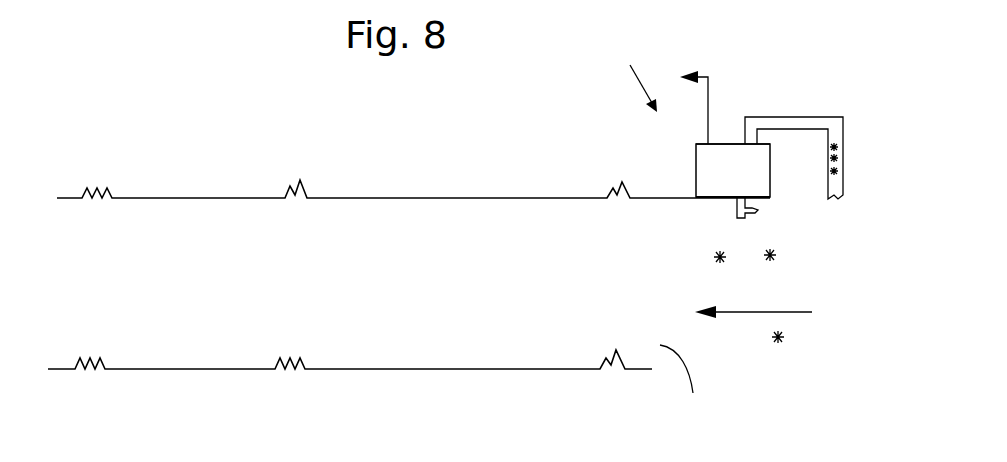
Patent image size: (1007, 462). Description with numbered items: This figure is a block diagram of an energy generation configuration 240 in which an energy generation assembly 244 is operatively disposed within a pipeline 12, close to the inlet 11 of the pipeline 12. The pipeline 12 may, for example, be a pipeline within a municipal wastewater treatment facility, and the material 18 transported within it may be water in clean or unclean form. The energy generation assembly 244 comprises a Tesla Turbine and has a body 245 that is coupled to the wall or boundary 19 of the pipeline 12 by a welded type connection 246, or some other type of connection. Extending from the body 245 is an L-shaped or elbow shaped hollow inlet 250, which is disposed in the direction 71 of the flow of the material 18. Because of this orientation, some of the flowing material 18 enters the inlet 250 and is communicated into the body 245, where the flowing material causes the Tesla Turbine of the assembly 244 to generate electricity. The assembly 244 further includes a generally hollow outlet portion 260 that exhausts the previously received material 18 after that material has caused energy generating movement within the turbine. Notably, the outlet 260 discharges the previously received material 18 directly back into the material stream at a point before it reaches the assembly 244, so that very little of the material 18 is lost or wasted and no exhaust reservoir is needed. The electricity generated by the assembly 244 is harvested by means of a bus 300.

The inlet 11 is at (687, 386).
The pipeline 12 is at (176, 377).
The material 18 is at (777, 258).
The wall or boundary 19 is at (195, 199).
The direction of flow 71 is at (730, 313).
The energy generation configuration 240 is at (625, 73).
The energy generation assembly 244 is at (723, 144).
The body 245 is at (696, 157).
The welded type connection 246 is at (696, 197).
The hollow inlet 250 is at (733, 208).
The hollow outlet portion 260 is at (807, 123).
The bus 300 is at (708, 88).